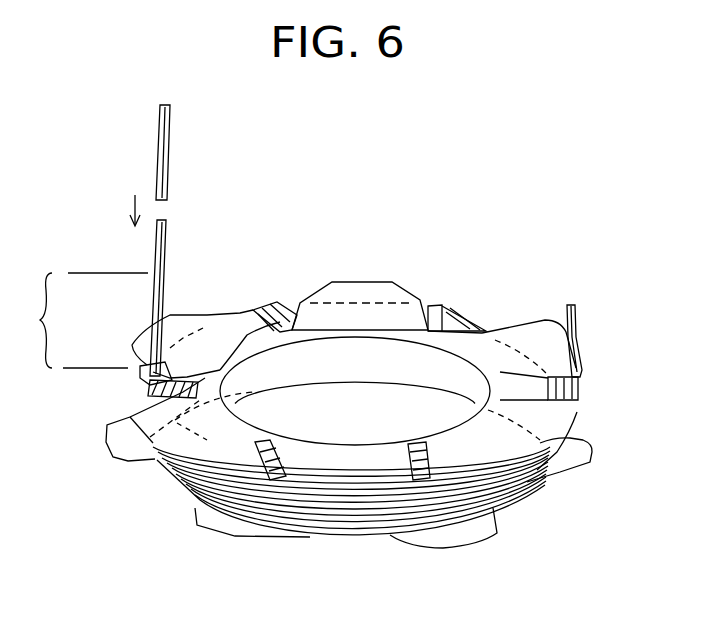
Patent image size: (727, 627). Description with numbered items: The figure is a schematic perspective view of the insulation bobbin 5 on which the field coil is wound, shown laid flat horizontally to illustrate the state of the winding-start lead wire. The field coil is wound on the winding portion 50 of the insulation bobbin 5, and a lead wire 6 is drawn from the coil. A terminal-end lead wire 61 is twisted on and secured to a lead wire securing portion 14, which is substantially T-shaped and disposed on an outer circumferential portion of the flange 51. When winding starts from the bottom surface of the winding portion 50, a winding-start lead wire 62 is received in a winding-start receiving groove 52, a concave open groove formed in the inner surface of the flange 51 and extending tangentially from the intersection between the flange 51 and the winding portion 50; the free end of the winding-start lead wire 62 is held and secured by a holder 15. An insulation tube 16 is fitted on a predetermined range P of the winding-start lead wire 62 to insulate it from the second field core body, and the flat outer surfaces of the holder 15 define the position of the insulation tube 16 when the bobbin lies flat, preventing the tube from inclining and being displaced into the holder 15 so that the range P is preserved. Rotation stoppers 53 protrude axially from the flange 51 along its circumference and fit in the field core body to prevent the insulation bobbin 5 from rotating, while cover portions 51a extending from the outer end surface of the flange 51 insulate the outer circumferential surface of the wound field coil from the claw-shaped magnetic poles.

The insulation bobbin 5 is at (392, 242).
The lead wire 6 is at (431, 277).
The lead wire securing portion 14 is at (580, 398).
The holder 15 is at (136, 390).
The insulation tube 16 is at (182, 125).
The winding portion 50 is at (447, 370).
The flange 51 is at (397, 312).
The cover portions 51a is at (330, 294).
The winding-start receiving groove 52 is at (146, 398).
The rotation stoppers 53 is at (262, 308).
The terminal-end lead wire 61 is at (578, 340).
The winding-start lead wire 62 is at (168, 233).
The predetermined range P is at (78, 320).